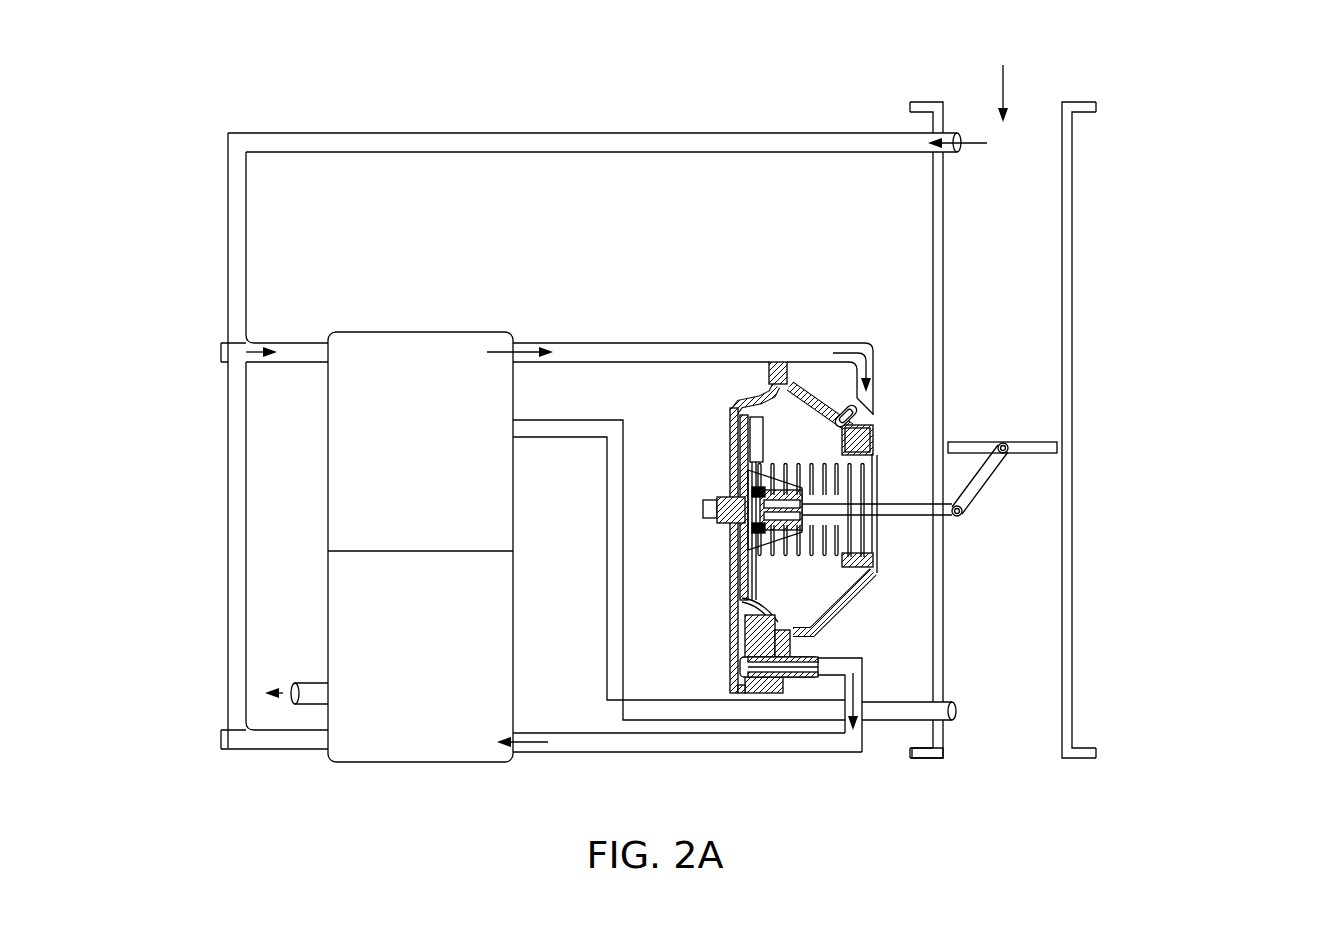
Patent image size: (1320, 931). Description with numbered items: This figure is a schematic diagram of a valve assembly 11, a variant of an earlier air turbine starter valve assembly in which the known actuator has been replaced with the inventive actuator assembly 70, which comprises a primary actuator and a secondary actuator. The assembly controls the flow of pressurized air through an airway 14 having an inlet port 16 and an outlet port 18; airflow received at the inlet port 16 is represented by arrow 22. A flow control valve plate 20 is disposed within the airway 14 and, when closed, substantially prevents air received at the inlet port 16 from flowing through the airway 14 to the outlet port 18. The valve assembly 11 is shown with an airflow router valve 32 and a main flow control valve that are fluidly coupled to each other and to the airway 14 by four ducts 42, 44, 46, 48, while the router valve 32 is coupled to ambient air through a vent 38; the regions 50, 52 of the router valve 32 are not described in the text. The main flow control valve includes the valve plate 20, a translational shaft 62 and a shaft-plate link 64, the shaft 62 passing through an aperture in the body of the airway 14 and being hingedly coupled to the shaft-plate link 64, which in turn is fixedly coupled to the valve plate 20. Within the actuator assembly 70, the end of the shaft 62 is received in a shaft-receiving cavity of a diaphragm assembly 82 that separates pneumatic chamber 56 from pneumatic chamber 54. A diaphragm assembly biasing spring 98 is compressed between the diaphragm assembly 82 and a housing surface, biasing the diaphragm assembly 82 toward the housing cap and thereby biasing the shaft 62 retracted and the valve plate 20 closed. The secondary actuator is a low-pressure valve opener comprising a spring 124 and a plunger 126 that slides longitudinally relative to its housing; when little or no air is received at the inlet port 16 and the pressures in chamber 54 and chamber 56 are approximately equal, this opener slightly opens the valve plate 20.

The valve assembly 11 is at (1184, 132).
The airway 14 is at (988, 286).
The inlet port 16 is at (1050, 108).
The outlet port 18 is at (947, 760).
The flow control valve plate 20 is at (1012, 440).
The arrow 22 is at (1000, 80).
The airflow router valve 32 is at (410, 332).
The vent 38 is at (297, 683).
The duct 42 is at (601, 133).
The duct 44 is at (690, 343).
The duct 46 is at (688, 700).
The duct 48 is at (583, 753).
The reservoir 50 is at (410, 463).
The pump 52 is at (410, 663).
The pneumatic chamber 54 is at (826, 445).
The pneumatic chamber 56 is at (732, 430).
The translational shaft 62 is at (928, 520).
The shaft-plate link 64 is at (986, 482).
The actuator assembly 70 is at (872, 615).
The diaphragm assembly 82 is at (740, 586).
The diaphragm assembly biasing spring 98 is at (868, 455).
The spring 124 is at (748, 494).
The plunger 126 is at (750, 522).